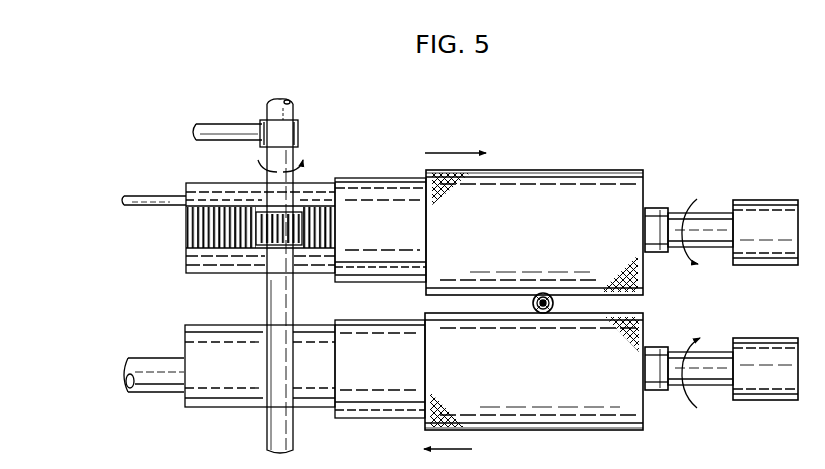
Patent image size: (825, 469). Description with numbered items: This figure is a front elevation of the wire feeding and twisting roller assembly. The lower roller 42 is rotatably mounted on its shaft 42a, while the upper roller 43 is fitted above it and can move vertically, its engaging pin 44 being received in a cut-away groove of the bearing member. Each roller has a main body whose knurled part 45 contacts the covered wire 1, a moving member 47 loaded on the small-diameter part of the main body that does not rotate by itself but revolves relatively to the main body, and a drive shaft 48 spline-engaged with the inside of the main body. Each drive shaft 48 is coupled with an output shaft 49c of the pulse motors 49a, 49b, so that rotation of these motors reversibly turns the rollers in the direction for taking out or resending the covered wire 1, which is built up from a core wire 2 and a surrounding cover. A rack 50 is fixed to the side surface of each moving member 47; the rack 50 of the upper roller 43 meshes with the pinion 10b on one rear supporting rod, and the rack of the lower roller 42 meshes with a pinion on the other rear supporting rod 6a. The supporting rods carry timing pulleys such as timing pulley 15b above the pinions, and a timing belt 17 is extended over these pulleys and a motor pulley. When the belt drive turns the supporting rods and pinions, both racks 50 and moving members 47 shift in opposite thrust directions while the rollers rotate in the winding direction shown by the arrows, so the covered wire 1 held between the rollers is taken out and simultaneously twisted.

The covered wire 1 is at (553, 303).
The core wire 2 is at (533, 302).
The rear supporting rod 6a is at (265, 434).
The pinion 10b is at (270, 212).
The timing pulley 15b is at (300, 122).
The timing belt 17 is at (208, 124).
The lower roller 42 is at (593, 431).
The shaft 42a is at (150, 392).
The upper roller 43 is at (553, 170).
The engaging pin 44 is at (150, 195).
The knurled part 45 is at (598, 170).
The moving member 47 is at (320, 180).
The drive shaft 48 is at (656, 253).
The pulse motor 49a is at (757, 202).
The pulse motor 49b is at (766, 392).
The output shaft 49c is at (716, 222).
The rack 50 is at (192, 231).